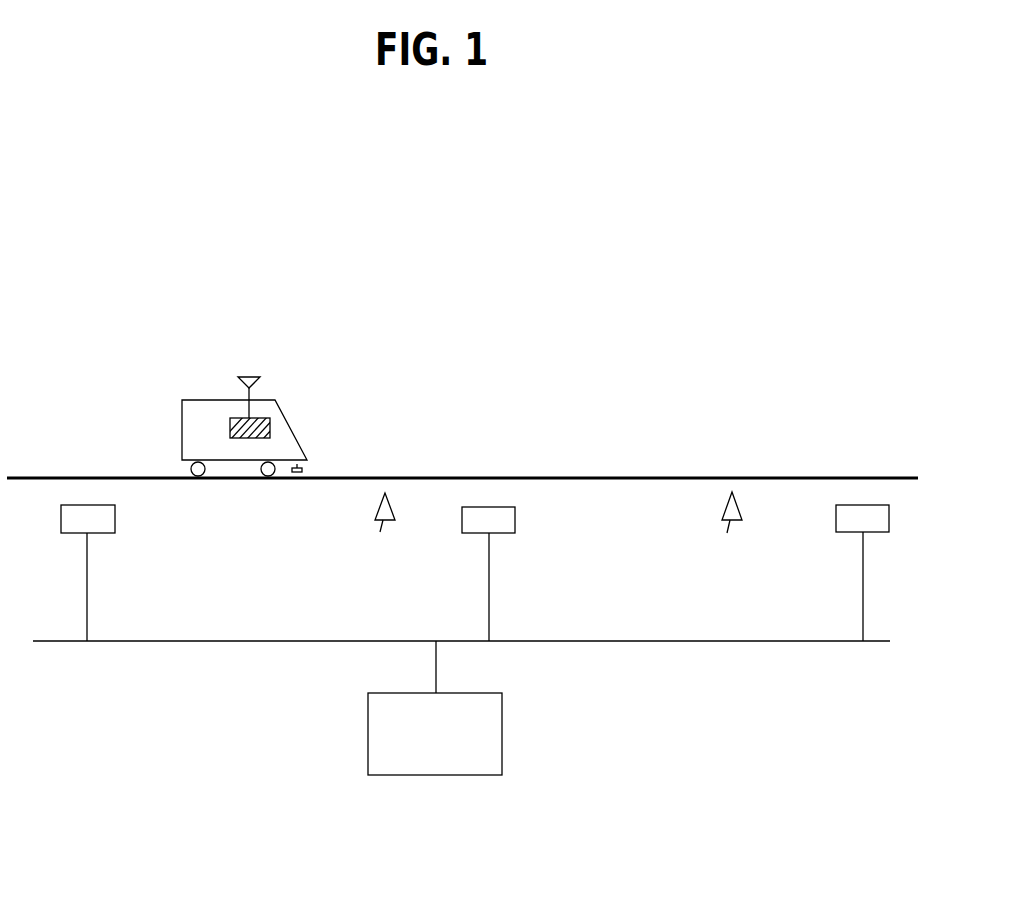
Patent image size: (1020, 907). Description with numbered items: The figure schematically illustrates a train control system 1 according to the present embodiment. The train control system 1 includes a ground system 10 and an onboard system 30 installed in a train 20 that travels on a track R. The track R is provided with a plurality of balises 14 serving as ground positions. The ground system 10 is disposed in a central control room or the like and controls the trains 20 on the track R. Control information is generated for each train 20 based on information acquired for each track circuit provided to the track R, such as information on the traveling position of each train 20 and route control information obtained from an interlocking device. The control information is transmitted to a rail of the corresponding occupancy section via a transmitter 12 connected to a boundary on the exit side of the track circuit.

The train control system 1 is at (462, 306).
The ground system 10 is at (502, 737).
The transmitter 12 is at (115, 520).
The balise 14 is at (553, 525).
The train 20 is at (196, 399).
The onboard system 30 is at (270, 425).
The track R is at (635, 476).